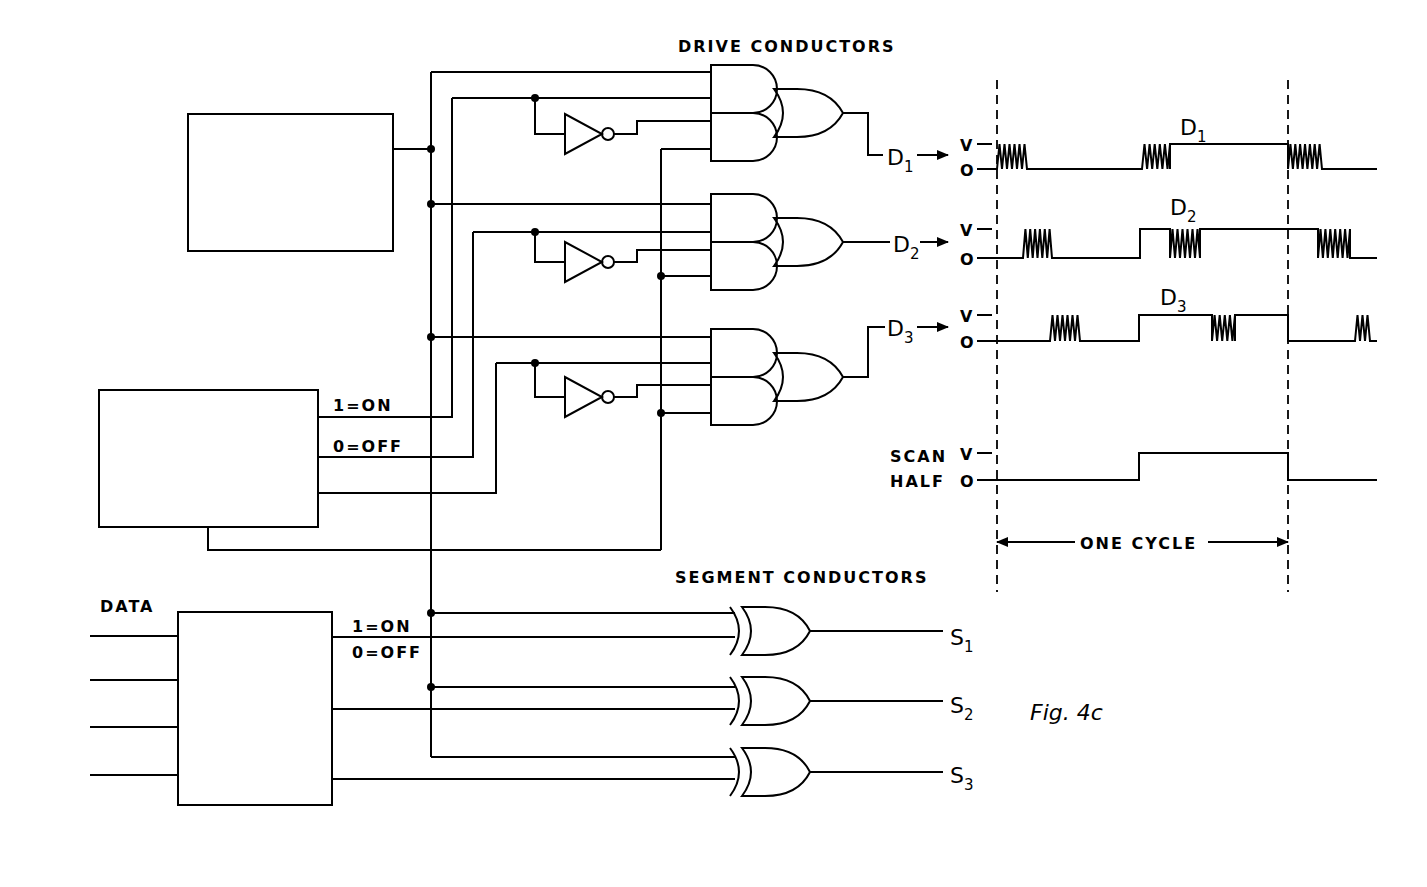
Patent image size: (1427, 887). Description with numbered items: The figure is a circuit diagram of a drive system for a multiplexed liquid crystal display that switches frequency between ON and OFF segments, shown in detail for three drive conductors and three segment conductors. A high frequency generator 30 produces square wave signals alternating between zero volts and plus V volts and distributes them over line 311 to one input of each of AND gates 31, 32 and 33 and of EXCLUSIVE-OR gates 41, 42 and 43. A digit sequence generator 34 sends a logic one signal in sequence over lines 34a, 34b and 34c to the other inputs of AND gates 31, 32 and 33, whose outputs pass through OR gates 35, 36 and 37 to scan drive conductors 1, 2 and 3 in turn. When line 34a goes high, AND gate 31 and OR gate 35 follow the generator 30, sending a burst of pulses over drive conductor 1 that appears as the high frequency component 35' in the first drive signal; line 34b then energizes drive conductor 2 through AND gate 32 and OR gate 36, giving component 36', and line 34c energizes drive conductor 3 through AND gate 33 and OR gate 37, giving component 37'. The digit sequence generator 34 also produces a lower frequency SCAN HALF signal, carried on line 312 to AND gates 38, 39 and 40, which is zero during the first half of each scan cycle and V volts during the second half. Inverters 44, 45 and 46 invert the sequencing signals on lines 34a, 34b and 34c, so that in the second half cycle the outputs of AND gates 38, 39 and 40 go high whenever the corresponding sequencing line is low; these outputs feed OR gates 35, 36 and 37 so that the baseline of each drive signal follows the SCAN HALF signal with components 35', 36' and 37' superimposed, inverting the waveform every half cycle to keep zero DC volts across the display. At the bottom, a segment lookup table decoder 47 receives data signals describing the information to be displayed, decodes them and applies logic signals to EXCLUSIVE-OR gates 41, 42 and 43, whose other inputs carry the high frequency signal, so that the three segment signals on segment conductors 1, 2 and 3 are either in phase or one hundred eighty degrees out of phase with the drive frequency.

The high frequency generator 30 is at (266, 118).
The AND gate 31 is at (755, 89).
The AND gate 32 is at (757, 217).
The AND gate 33 is at (757, 350).
The digit sequence generator 34 is at (293, 394).
The line 34a is at (412, 417).
The line 34b is at (405, 460).
The line 34c is at (405, 496).
The OR gate 35 is at (828, 110).
The OR gate 36 is at (832, 229).
The OR gate 37 is at (829, 362).
The AND gate 38 is at (755, 152).
The AND gate 39 is at (757, 279).
The AND gate 40 is at (757, 416).
The EXCLUSIVE-OR gate 41 is at (778, 621).
The EXCLUSIVE-OR gate 42 is at (778, 691).
The EXCLUSIVE-OR gate 43 is at (785, 763).
The inverter 44 is at (578, 144).
The inverter 45 is at (578, 272).
The inverter 46 is at (578, 407).
The segment lookup table decoder 47 is at (243, 617).
The line 311 is at (431, 356).
The line 312 is at (661, 515).
The high frequency component 35' is at (1177, 147).
The high frequency component 36' is at (1177, 238).
The high frequency component 37' is at (1177, 330).
The drive conductor / segment conductor 1 is at (868, 137).
The drive conductor / segment conductor 2 is at (873, 242).
The drive conductor / segment conductor 3 is at (868, 355).